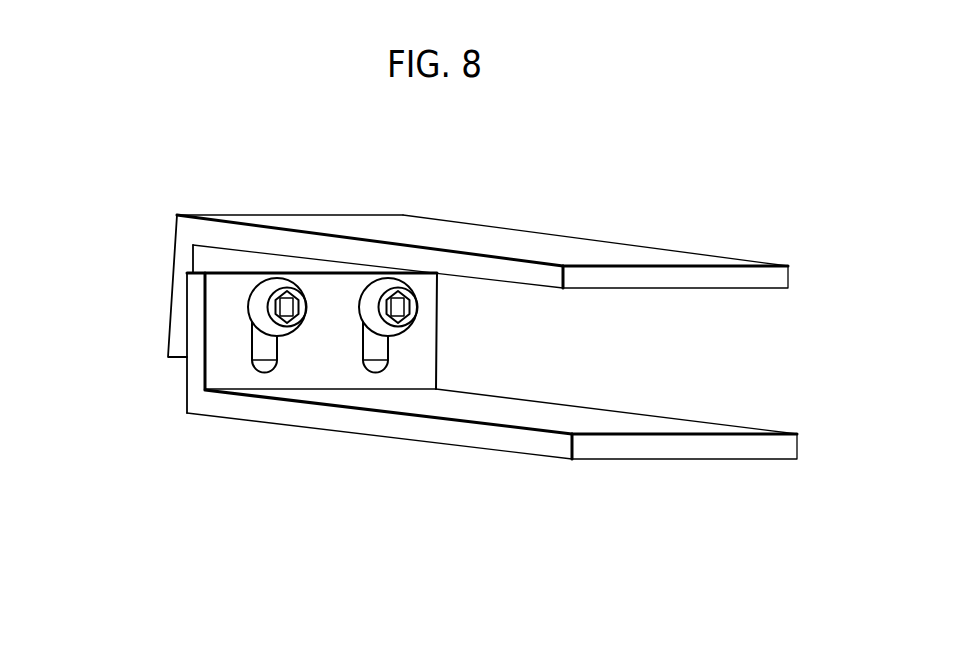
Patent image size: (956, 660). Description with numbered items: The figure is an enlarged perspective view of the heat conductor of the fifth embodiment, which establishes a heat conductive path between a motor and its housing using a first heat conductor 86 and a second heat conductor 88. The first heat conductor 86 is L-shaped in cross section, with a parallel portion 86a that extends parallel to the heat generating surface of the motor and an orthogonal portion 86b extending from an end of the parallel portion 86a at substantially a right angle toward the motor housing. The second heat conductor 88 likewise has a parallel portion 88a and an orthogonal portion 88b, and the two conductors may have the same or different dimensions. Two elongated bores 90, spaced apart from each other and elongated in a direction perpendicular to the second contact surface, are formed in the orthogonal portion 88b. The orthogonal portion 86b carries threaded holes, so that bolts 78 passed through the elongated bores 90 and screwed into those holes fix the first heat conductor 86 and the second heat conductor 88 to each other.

The bolt 78 is at (247, 314).
The first heat conductor 86 is at (435, 257).
The parallel portion 86a is at (578, 252).
The orthogonal portion 86b is at (178, 305).
The second heat conductor 88 is at (435, 432).
The parallel portion 88a is at (435, 445).
The orthogonal portion 88b is at (197, 380).
The elongated bore 90 is at (262, 372).